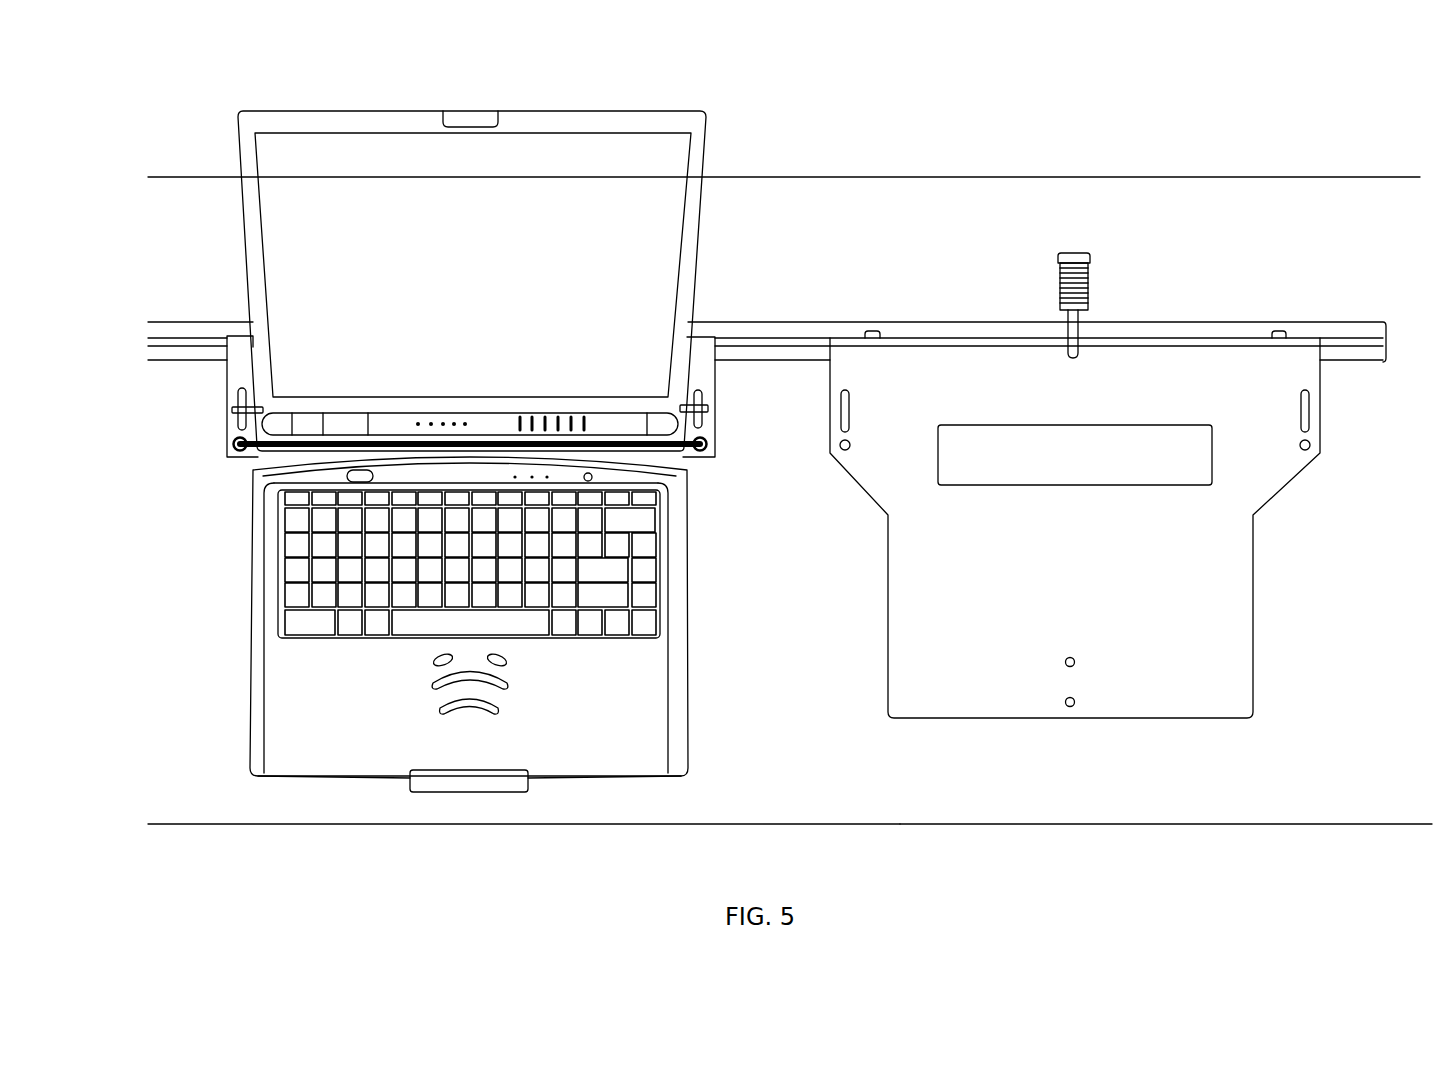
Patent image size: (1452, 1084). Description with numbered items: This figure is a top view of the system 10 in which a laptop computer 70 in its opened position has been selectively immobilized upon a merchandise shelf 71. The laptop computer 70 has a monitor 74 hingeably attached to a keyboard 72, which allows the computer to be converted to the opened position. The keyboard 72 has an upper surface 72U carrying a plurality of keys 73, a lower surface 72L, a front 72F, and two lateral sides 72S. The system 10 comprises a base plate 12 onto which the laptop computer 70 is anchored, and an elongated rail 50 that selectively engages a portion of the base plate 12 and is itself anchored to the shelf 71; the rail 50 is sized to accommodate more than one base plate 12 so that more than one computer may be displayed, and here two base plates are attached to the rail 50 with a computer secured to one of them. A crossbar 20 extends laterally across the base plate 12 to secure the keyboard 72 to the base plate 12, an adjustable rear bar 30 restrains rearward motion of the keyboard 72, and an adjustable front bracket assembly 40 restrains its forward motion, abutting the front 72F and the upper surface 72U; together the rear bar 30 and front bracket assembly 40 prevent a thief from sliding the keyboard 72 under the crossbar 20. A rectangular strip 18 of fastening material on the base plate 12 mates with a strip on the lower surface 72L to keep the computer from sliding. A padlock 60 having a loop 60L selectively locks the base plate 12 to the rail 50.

The system 10 is at (210, 581).
The base plate 12 is at (1075, 499).
The rectangular strip of fastening material 18 is at (1187, 423).
The crossbar 20 is at (690, 453).
The adjustable rear bar 30 is at (708, 422).
The adjustable front bracket assembly 40 is at (484, 830).
The rail 50 is at (1297, 322).
The padlock 60 is at (1060, 269).
The loop 60L is at (1080, 332).
The laptop computer 70 is at (466, 666).
The merchandise shelf 71 is at (1293, 810).
The keyboard 72 is at (688, 737).
The lower surface 72L is at (687, 660).
The lateral sides 72S is at (250, 712).
The upper surface 72U is at (592, 723).
The front 72F is at (315, 778).
The keys 73 is at (642, 572).
The monitor 74 is at (668, 163).